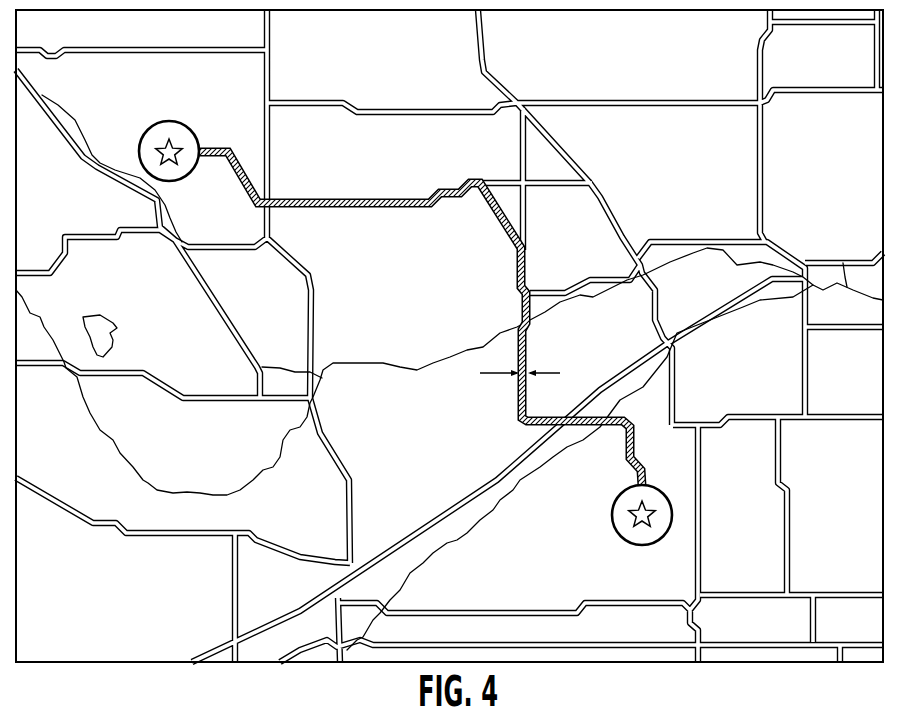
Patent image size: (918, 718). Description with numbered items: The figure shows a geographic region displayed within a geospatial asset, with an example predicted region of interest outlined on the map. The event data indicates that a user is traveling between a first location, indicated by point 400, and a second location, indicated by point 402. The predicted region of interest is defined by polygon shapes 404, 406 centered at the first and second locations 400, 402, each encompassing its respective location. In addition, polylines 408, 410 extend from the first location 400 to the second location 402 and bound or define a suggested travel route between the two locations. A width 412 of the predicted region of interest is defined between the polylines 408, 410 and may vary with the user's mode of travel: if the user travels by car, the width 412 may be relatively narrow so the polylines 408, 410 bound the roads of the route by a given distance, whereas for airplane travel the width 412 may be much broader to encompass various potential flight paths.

The first location 400 is at (170, 139).
The second location 402 is at (643, 528).
The polygon shape 404 is at (190, 130).
The polygon shape 406 is at (613, 513).
The polyline 408 is at (407, 208).
The polyline 410 is at (408, 198).
The width 412 is at (500, 373).